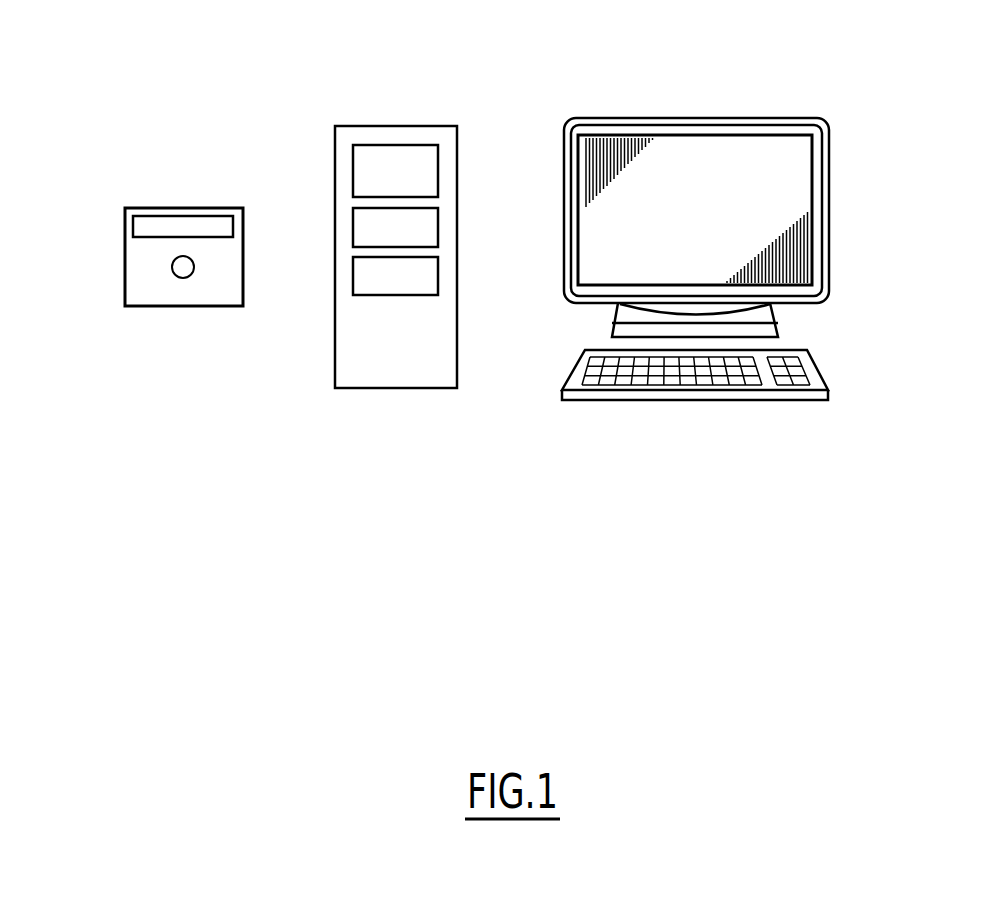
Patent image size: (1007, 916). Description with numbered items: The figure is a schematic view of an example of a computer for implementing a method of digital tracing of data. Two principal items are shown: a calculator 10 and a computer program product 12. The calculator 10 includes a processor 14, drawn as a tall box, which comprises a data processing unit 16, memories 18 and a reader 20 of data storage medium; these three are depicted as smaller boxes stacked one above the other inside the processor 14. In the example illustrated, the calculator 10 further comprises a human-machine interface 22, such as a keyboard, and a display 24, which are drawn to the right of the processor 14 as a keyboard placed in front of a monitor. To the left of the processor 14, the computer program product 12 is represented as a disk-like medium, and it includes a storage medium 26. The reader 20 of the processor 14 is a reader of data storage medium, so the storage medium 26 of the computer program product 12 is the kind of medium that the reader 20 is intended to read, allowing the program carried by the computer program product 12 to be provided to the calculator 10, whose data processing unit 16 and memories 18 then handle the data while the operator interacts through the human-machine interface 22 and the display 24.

The calculator 10 is at (830, 100).
The computer program product 12 is at (118, 200).
The processor 14 is at (344, 369).
The data processing unit 16 is at (371, 135).
The memories 18 is at (447, 222).
The reader 20 is at (440, 272).
The human-machine interface 22 is at (717, 400).
The display 24 is at (817, 196).
The storage medium 26 is at (187, 200).